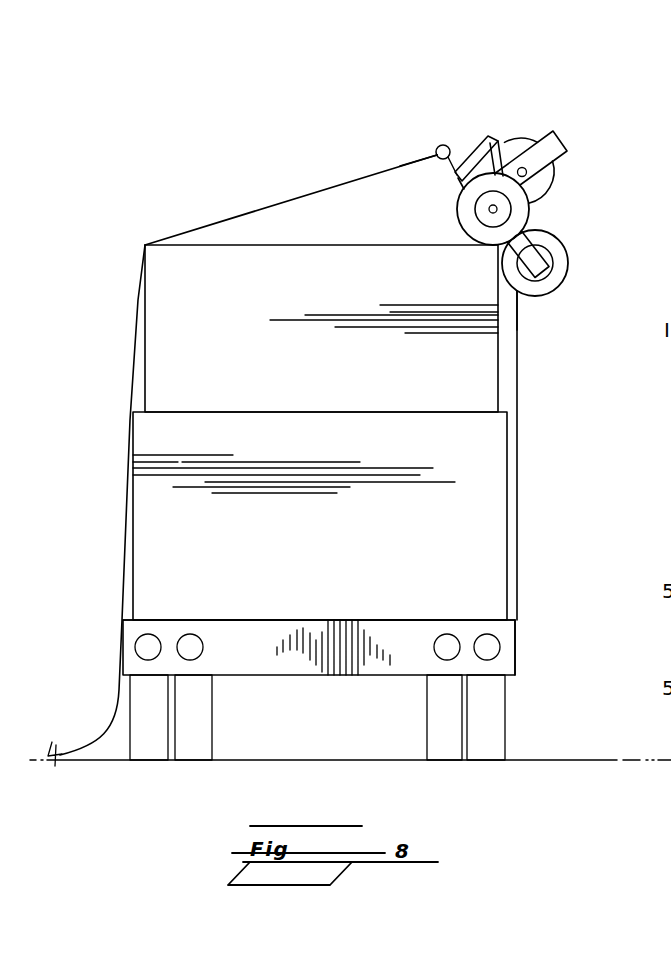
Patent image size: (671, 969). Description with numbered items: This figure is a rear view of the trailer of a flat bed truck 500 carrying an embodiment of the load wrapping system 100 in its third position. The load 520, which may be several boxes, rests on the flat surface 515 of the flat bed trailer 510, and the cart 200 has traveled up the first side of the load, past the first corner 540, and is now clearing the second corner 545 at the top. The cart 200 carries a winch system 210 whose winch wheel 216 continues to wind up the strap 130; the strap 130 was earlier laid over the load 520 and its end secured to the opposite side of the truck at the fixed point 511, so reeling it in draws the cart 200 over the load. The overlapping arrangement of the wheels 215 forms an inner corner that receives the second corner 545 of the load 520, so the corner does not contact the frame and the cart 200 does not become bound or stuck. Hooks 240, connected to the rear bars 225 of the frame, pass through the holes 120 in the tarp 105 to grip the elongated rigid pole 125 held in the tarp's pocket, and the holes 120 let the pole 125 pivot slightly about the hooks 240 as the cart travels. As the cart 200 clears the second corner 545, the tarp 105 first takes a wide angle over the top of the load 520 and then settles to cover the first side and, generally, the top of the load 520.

The load wrapping system 100 is at (490, 108).
The tarp 105 is at (318, 189).
The holes 120 is at (437, 152).
The elongated rigid pole 125 is at (438, 153).
The strap 130 is at (518, 398).
The cart 200 is at (520, 192).
The winch system 210 is at (546, 115).
The wheels 215 is at (569, 261).
The winch wheel 216 is at (527, 130).
The rear bars 225 is at (480, 259).
The hooks 240 is at (443, 145).
The flat bed truck 500 is at (205, 162).
The flat bed trailer 510 is at (497, 667).
The fixed point 511 is at (512, 618).
The flat surface 515 is at (462, 618).
The load 520 is at (478, 511).
The first corner 540 is at (145, 245).
The second corner 545 is at (542, 296).